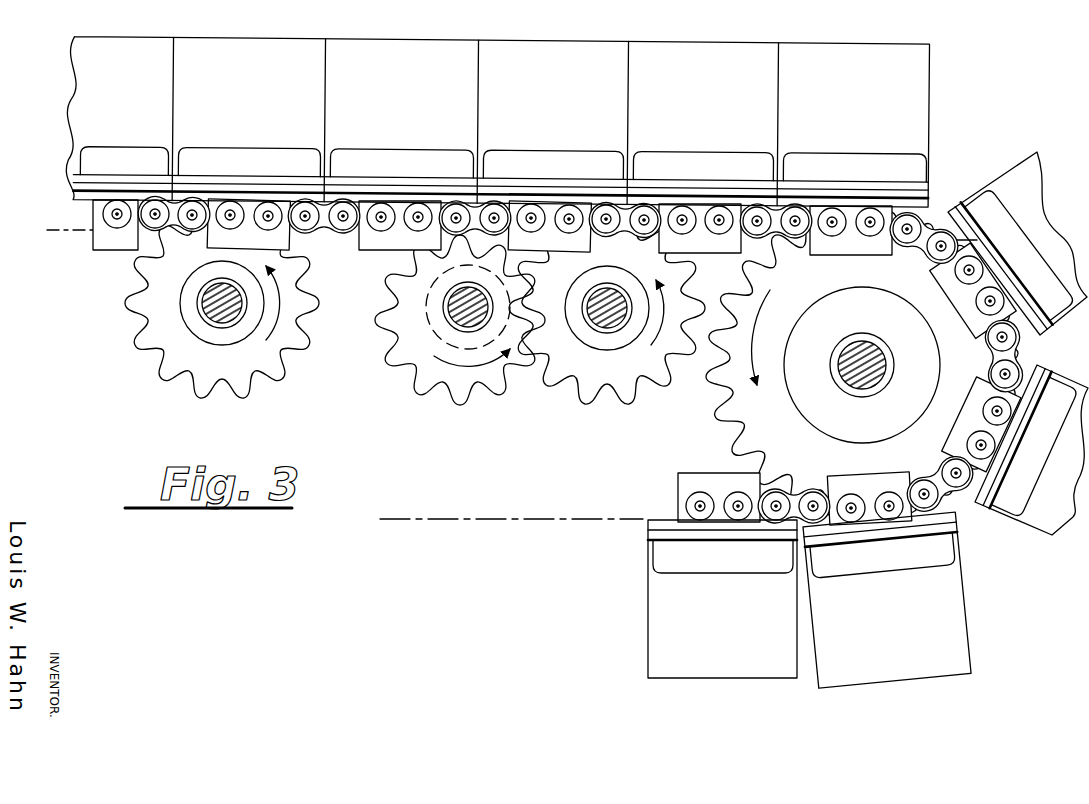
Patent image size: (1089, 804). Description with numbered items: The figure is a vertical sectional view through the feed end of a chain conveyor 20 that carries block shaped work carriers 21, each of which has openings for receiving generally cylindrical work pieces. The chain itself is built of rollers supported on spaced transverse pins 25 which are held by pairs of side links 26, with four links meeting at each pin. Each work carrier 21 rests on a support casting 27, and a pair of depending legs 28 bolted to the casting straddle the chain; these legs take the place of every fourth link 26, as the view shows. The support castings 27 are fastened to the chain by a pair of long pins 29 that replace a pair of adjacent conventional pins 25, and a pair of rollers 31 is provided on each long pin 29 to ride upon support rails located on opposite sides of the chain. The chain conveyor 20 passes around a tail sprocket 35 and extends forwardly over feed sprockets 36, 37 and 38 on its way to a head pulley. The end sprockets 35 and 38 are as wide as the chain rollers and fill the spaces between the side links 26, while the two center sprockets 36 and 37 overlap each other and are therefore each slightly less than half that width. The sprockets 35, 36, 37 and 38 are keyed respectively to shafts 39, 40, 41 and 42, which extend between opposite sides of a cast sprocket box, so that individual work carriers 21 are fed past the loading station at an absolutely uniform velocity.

The chain conveyor 20 is at (530, 331).
The work carrier 21 is at (612, 40).
The transverse pin 25 is at (188, 230).
The side link 26 is at (622, 238).
The support casting 27 is at (106, 145).
The depending leg 28 is at (290, 245).
The long pin 29 is at (985, 303).
The roller 31 is at (102, 214).
The tail sprocket 35 is at (718, 430).
The feed sprocket 36 is at (622, 418).
The feed sprocket 37 is at (427, 398).
The feed sprocket 38 is at (245, 398).
The shaft 39 is at (866, 340).
The shaft 40 is at (624, 332).
The shaft 41 is at (447, 310).
The shaft 42 is at (228, 330).